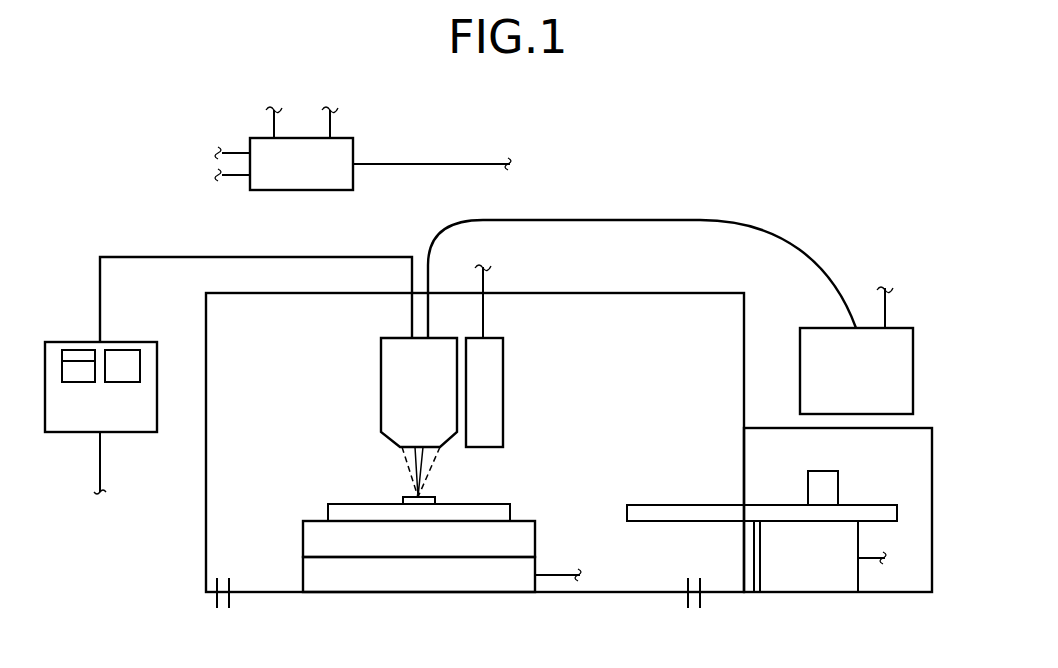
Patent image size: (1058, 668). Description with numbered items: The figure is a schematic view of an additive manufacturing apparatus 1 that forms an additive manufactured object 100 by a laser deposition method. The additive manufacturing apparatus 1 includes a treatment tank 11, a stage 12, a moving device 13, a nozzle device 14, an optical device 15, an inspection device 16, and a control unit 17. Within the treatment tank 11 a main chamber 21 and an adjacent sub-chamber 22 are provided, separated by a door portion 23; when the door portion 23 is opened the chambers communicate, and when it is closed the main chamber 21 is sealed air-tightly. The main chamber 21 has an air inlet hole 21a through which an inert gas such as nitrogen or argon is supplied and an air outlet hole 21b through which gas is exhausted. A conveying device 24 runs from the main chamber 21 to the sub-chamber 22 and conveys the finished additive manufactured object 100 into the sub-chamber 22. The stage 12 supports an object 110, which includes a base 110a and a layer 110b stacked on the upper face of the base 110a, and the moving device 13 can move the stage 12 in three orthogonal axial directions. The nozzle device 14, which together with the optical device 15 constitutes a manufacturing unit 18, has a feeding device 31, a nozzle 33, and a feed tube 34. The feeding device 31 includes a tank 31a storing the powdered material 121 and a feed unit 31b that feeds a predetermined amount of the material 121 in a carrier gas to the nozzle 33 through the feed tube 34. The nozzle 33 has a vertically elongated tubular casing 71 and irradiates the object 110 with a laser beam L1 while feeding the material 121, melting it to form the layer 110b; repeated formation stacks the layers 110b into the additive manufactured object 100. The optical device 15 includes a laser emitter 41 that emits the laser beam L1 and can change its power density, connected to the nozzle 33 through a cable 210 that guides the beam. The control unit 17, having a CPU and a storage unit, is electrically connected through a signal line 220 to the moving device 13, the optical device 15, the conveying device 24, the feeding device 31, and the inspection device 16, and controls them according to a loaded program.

The additive manufacturing apparatus 1 is at (608, 190).
The treatment tank 11 is at (206, 548).
The stage 12 is at (303, 540).
The moving device 13 is at (303, 575).
The nozzle device 14 is at (378, 330).
The optical device 15 is at (864, 230).
The inspection device 16 is at (503, 368).
The control unit 17 is at (353, 150).
The manufacturing unit 18 is at (362, 418).
The main chamber 21 is at (590, 597).
The air inlet hole 21a is at (217, 597).
The air outlet hole 21b is at (703, 597).
The sub-chamber 22 is at (912, 594).
The door portion 23 is at (745, 448).
The conveying device 24 is at (857, 582).
The feeding device 31 is at (135, 342).
The tank 31a is at (72, 350).
The feed unit 31b is at (128, 382).
The nozzle 33 is at (381, 352).
The feed tube 34 is at (175, 257).
The laser emitter 41 is at (913, 366).
The casing 71 is at (381, 385).
The additive manufactured object 100 is at (838, 484).
The object 110 is at (497, 505).
The base 110a is at (330, 512).
The layer 110b is at (408, 498).
The material 121 is at (70, 370).
The cable 210 is at (798, 243).
The signal line 220 is at (271, 122).
The laser beam L1 is at (425, 488).